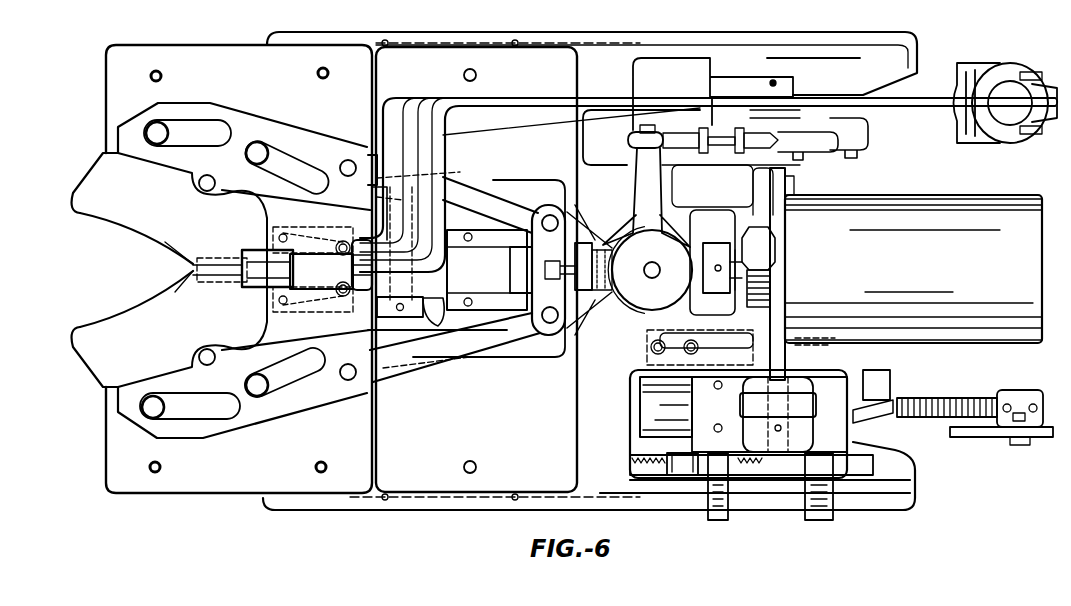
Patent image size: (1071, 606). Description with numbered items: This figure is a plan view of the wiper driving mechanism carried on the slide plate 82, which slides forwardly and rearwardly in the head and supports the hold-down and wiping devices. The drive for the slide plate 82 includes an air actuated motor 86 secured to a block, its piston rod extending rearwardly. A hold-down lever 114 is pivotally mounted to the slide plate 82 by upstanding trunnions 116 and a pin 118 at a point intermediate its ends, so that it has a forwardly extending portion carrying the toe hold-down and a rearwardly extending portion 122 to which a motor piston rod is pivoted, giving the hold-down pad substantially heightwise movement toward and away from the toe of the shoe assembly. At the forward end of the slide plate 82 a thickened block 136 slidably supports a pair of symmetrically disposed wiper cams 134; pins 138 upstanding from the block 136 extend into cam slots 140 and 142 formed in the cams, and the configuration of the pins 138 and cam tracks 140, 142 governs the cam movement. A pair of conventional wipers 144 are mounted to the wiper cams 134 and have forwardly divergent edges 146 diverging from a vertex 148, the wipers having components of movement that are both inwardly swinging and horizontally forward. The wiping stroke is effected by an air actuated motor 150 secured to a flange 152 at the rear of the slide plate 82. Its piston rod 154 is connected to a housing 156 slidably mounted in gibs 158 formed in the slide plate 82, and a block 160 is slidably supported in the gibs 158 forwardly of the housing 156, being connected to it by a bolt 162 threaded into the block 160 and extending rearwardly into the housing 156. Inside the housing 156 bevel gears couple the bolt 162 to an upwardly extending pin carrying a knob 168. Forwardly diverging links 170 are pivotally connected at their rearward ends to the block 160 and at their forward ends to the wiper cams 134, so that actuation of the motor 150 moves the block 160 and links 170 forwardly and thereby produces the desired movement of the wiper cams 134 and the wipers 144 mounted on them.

The slide plate 82 is at (494, 443).
The air actuated motor 86 is at (643, 410).
The hold-down lever 114 is at (438, 260).
The trunnions 116 is at (432, 323).
The pin 118 is at (375, 200).
The rearwardly extending portion 122 is at (517, 102).
The wiper cams 134 is at (232, 123).
The thickened block 136 is at (232, 55).
The pins 138 is at (253, 153).
The cam slot 140 is at (180, 143).
The cam slot 142 is at (274, 370).
The wipers 144 is at (92, 178).
The forwardly divergent edges 146 is at (118, 224).
The vertex 148 is at (181, 274).
The air actuated motor 150 is at (947, 322).
The flange 152 is at (786, 210).
The piston rod 154 is at (740, 288).
The housing 156 is at (610, 250).
The gibs 158 is at (585, 222).
The block 160 is at (560, 207).
The bolt 162 is at (560, 286).
The knob 168 is at (637, 290).
The forwardly diverging links 170 is at (478, 200).